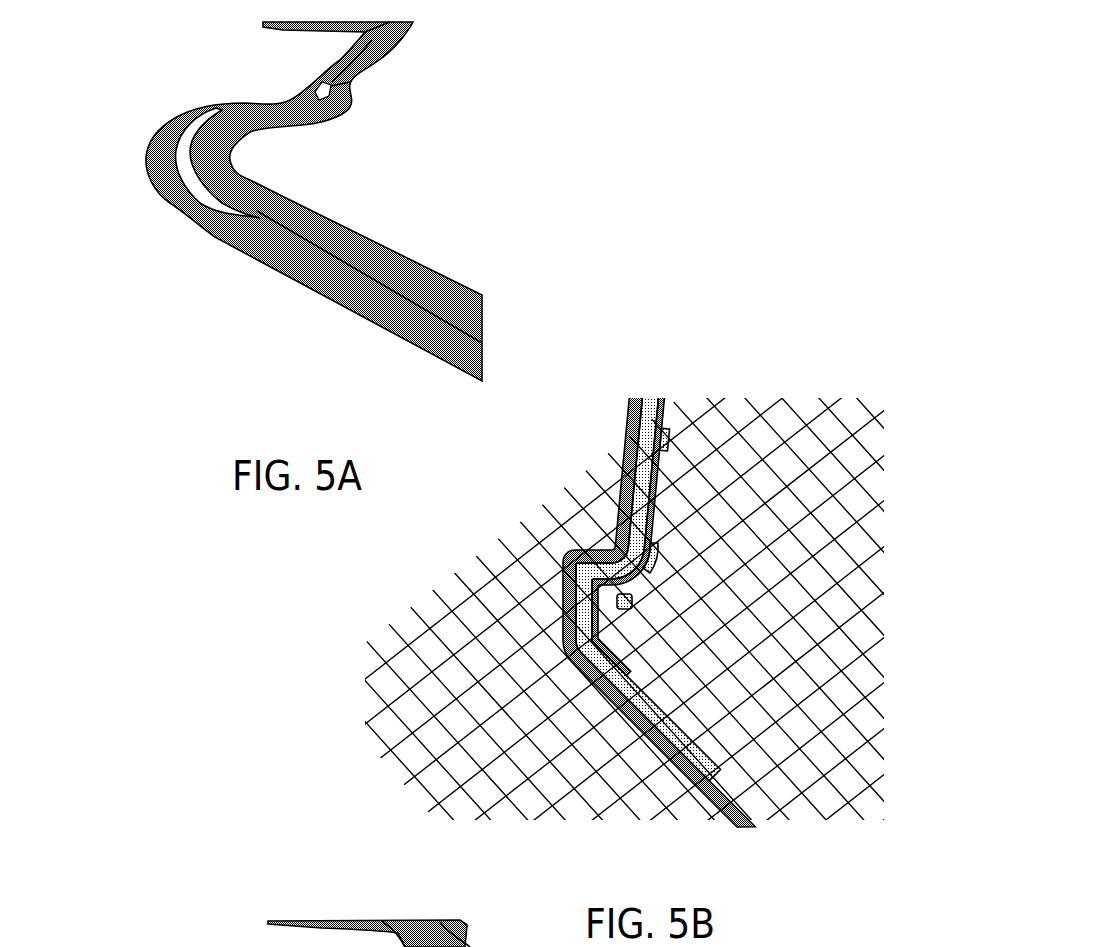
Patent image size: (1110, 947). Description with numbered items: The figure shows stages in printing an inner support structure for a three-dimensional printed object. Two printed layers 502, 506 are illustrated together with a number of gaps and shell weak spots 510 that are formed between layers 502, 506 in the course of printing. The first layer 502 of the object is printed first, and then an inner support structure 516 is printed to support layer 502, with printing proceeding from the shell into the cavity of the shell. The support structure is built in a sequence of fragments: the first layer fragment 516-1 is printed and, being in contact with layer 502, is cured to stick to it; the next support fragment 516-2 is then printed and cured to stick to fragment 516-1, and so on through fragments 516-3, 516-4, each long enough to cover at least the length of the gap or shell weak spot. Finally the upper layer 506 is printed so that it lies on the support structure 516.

In FIG. 5A, the first printed layer 502 is at (325, 285).
In FIG. 5B, the first printed layer 502 is at (716, 597).
In FIG. 5A, the upper printed layer 506 is at (437, 293).
In FIG. 5A, the gaps and shell weak spots 510 is at (157, 135).
In FIG. 5B, the inner support structure 516 is at (716, 564).
In FIG. 5B, the first layer fragment 516-1 is at (576, 550).
In FIG. 5B, the second support fragment 516-2 is at (660, 428).
In FIG. 5B, the third support fragment 516-3 is at (660, 553).
In FIG. 5B, the fourth support fragment 516-4 is at (628, 608).